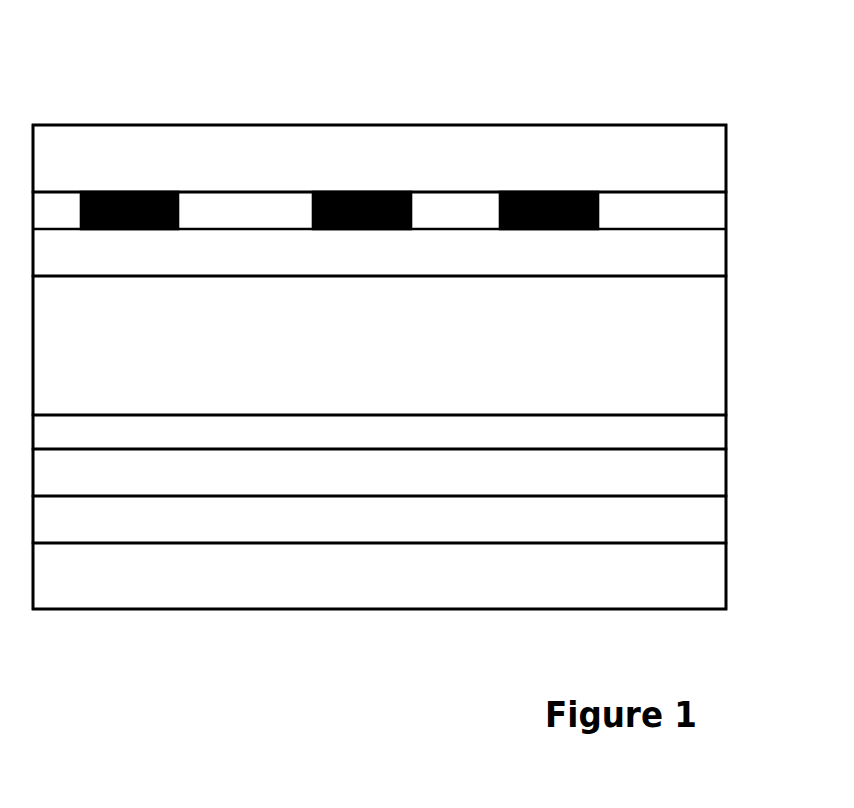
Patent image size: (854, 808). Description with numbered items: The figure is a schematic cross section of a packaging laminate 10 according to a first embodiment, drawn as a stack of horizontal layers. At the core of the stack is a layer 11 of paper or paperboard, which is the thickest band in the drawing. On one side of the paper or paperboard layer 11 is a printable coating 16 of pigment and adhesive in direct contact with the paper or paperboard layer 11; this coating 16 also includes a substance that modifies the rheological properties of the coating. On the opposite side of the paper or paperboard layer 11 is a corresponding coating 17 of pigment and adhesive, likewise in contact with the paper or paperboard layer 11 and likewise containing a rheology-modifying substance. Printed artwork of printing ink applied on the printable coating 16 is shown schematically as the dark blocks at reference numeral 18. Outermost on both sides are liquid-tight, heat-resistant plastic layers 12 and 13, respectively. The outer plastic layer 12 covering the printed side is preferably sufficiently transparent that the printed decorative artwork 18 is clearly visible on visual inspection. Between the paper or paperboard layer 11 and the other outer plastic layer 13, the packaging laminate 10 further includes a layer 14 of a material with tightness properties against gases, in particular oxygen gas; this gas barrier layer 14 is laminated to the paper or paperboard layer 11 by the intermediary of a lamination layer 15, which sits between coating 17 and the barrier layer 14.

The packaging laminate 10 is at (636, 81).
The paper or paperboard layer 11 is at (713, 348).
The outer liquid-tight heat-resistant plastic layer 12 is at (713, 160).
The outer liquid-tight heat-resistant plastic layer 13 is at (713, 581).
The gas barrier layer 14 is at (713, 526).
The lamination layer 15 is at (713, 478).
The printable coating 16 is at (713, 258).
The coating 17 is at (713, 435).
The printed decorative artwork 18 is at (127, 199).